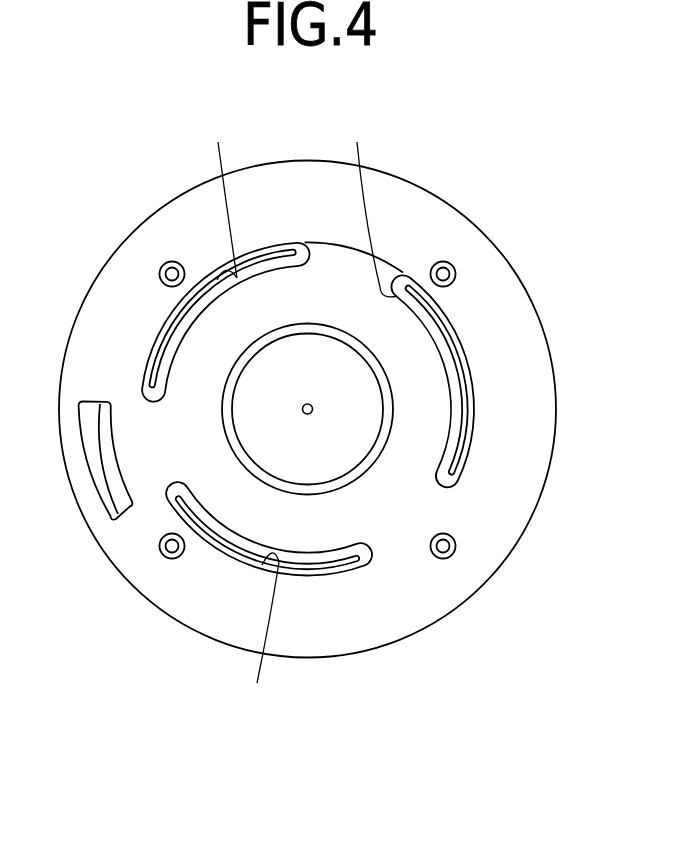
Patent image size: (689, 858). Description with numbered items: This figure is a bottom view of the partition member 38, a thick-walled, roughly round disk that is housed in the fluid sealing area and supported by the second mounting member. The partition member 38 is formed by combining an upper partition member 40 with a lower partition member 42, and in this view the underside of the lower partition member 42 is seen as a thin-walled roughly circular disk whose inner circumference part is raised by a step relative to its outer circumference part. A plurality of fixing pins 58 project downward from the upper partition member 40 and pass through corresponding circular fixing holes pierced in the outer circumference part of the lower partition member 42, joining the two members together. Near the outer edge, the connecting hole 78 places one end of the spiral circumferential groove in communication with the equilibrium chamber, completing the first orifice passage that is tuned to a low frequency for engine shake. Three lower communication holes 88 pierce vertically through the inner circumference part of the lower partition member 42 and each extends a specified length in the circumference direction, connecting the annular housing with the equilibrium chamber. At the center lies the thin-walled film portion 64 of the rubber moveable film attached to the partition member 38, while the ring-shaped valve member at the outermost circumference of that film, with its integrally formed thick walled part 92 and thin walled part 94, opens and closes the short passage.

The partition member 38 is at (529, 228).
The upper partition member 40 is at (118, 478).
The lower partition member 42 is at (507, 493).
The fixing pins 58 is at (168, 262).
The film portion 64 is at (327, 460).
The connecting hole 78 is at (98, 429).
The lower communication hole 88 is at (301, 412).
The thick walled part 92 is at (160, 377).
The thin walled part 94 is at (167, 332).